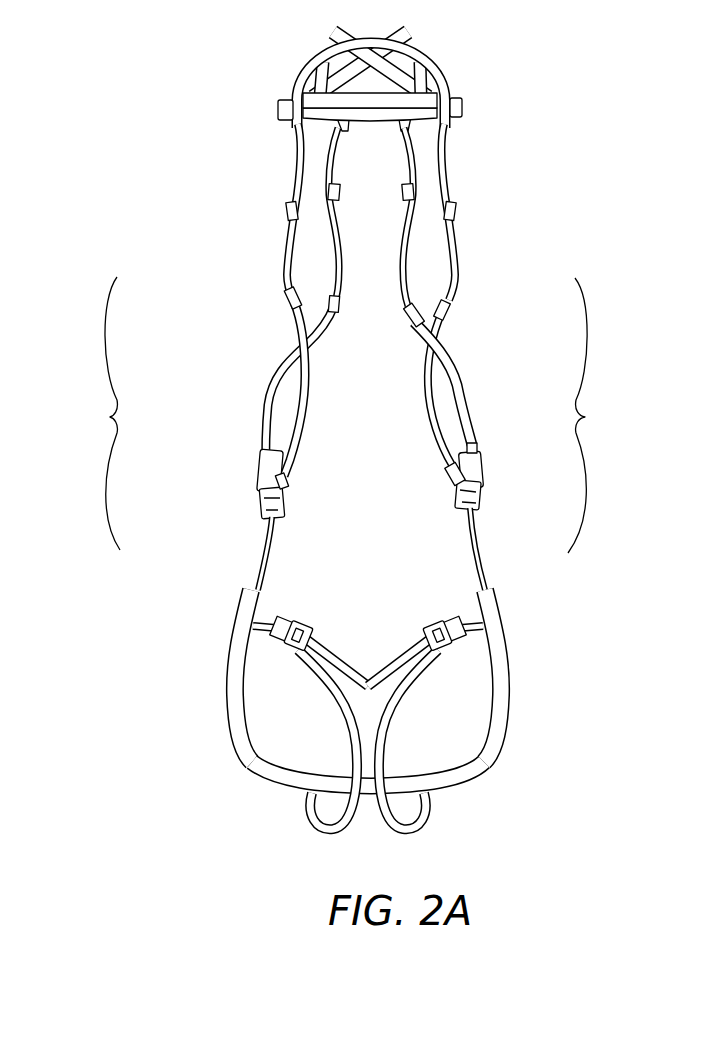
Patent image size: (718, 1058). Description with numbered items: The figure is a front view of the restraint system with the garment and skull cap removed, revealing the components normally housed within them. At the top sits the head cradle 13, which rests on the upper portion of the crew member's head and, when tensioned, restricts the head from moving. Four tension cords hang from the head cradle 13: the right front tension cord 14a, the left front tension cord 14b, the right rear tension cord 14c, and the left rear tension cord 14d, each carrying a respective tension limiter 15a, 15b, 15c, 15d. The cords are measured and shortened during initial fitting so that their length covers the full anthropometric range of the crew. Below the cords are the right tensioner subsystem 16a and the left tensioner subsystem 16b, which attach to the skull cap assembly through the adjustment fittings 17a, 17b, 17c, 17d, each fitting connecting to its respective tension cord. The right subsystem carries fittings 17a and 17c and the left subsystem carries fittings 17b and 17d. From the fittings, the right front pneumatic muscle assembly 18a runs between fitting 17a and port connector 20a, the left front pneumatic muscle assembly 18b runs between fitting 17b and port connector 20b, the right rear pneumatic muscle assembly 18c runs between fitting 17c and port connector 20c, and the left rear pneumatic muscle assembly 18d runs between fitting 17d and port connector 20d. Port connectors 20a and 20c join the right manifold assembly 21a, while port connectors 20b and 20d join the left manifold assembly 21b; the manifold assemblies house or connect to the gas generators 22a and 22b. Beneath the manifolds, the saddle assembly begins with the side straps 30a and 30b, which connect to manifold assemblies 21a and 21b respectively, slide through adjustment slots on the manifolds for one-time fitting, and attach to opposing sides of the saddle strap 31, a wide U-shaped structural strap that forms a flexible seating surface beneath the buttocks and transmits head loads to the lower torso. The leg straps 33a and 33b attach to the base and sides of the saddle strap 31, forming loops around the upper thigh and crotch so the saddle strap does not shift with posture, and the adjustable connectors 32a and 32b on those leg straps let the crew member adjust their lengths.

The head cradle 13 is at (298, 90).
The right front tension cord 14a is at (298, 167).
The left front tension cord 14b is at (446, 160).
The right rear tension cord 14c is at (323, 160).
The left rear tension cord 14d is at (412, 142).
The tension limiter 15a is at (287, 212).
The tension limiter 15b is at (457, 210).
The tension limiter 15c is at (328, 185).
The tension limiter 15d is at (412, 188).
The right tensioner subsystem 16a is at (110, 418).
The left tensioner subsystem 16b is at (586, 420).
The adjustment fitting 17a is at (289, 298).
The adjustment fitting 17b is at (422, 312).
The adjustment fitting 17c is at (328, 300).
The adjustment fitting 17d is at (449, 300).
The right front pneumatic muscle assembly 18a is at (304, 395).
The left front pneumatic muscle assembly 18b is at (452, 383).
The right rear pneumatic muscle assembly 18c is at (262, 425).
The left rear pneumatic muscle assembly 18d is at (466, 412).
The port connector 20a is at (287, 485).
The port connector 20b is at (450, 480).
The port connector 20c is at (258, 455).
The port connector 20d is at (478, 453).
The right manifold assembly 21a is at (262, 520).
The left manifold assembly 21b is at (474, 517).
The gas generator 22a is at (260, 485).
The gas generator 22b is at (478, 484).
The side strap 30a is at (246, 592).
The side strap 30b is at (497, 592).
The saddle strap 31 is at (246, 666).
The adjustable connector 32a is at (298, 618).
The adjustable connector 32b is at (444, 622).
The leg strap 33a is at (305, 810).
The leg strap 33b is at (437, 810).